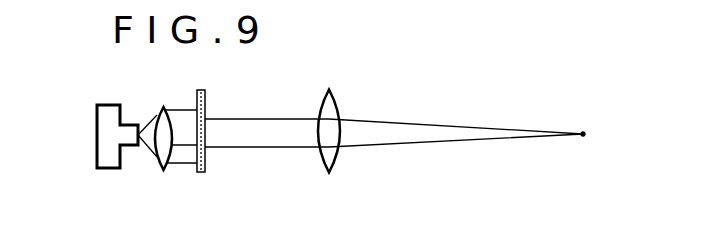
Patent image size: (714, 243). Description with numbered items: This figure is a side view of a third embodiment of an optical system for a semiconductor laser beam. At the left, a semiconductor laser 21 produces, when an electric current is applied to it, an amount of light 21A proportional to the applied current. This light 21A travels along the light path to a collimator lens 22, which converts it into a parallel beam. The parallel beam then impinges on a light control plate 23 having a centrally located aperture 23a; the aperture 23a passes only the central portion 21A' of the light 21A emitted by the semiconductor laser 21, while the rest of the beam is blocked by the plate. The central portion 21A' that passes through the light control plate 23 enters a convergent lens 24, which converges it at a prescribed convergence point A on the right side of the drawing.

The semiconductor laser 21 is at (105, 104).
The light 21A is at (139, 111).
The collimator lens 22 is at (165, 110).
The light control plate 23 is at (204, 90).
The aperture 23a is at (207, 126).
The convergent lens 24 is at (340, 110).
The central portion of the light 21A' is at (413, 158).
The convergence point A is at (584, 132).